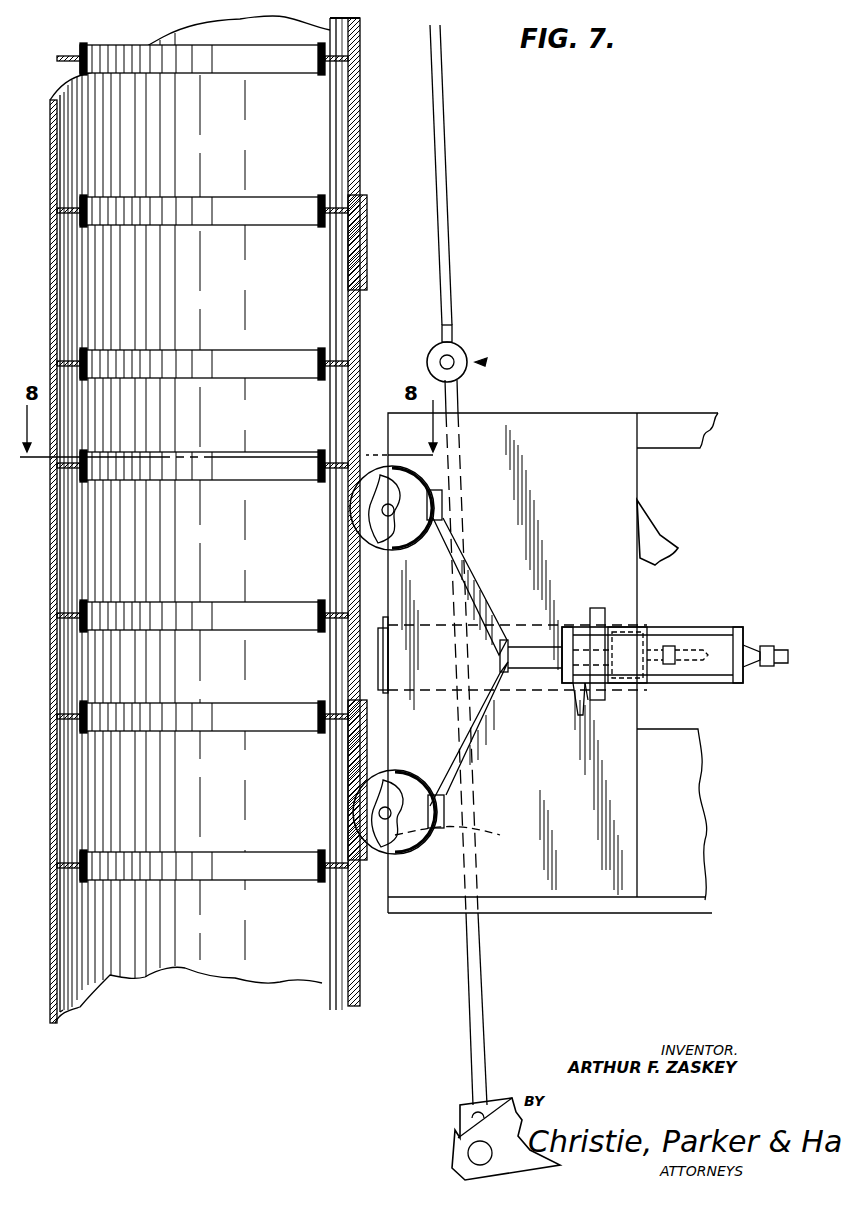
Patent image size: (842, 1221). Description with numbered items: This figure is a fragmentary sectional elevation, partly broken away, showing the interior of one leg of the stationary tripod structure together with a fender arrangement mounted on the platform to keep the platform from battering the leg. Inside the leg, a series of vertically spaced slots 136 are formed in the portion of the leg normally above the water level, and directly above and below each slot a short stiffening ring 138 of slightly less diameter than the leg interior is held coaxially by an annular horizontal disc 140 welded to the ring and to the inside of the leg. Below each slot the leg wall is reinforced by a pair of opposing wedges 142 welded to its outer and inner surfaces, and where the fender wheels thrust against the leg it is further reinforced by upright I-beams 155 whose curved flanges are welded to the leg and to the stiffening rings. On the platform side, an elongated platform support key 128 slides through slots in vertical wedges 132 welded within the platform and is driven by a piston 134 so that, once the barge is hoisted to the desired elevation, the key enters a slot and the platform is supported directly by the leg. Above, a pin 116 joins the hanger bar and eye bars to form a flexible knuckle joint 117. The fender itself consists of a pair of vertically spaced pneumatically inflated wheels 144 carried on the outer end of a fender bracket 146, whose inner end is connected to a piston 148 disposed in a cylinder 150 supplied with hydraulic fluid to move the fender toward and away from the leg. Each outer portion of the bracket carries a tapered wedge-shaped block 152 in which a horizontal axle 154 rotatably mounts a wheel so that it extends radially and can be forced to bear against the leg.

The pin 116 is at (453, 356).
The flexible knuckle joint 117 is at (486, 362).
The platform support key 128 is at (524, 682).
The vertical wedges 132 is at (392, 690).
The piston 134 is at (683, 646).
The slots 136 is at (343, 408).
The stiffening ring 138 is at (238, 213).
The annular horizontal disc 140 is at (74, 614).
The opposing wedges 142 is at (351, 232).
The pneumatically inflated wheels 144 is at (398, 486).
The fender bracket 146 is at (484, 580).
The piston 148 is at (528, 645).
The cylinder 150 is at (665, 628).
The wedge-shaped block 152 is at (478, 830).
The horizontal axle 154 is at (380, 813).
The upright I-beams 155 is at (338, 283).